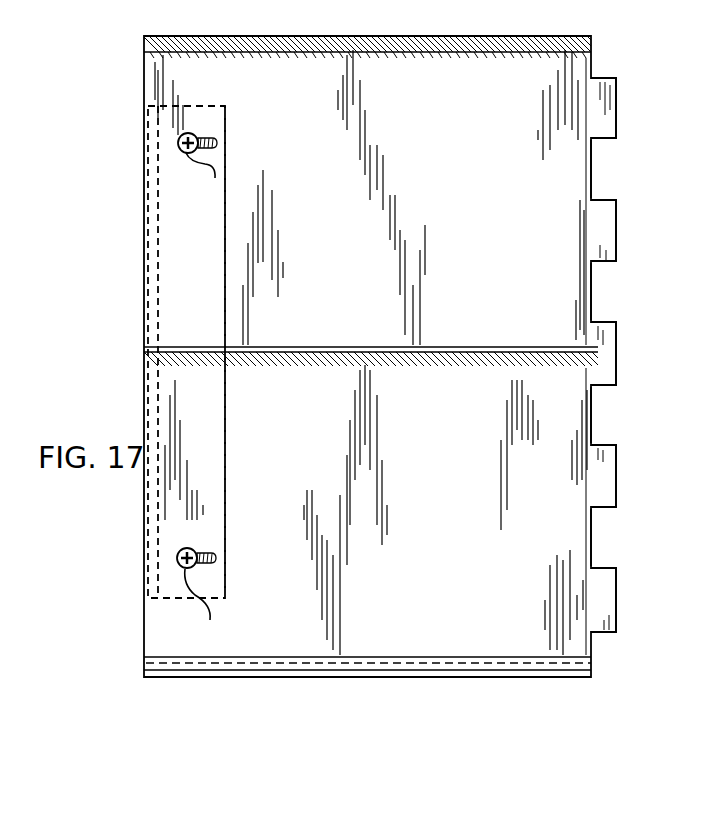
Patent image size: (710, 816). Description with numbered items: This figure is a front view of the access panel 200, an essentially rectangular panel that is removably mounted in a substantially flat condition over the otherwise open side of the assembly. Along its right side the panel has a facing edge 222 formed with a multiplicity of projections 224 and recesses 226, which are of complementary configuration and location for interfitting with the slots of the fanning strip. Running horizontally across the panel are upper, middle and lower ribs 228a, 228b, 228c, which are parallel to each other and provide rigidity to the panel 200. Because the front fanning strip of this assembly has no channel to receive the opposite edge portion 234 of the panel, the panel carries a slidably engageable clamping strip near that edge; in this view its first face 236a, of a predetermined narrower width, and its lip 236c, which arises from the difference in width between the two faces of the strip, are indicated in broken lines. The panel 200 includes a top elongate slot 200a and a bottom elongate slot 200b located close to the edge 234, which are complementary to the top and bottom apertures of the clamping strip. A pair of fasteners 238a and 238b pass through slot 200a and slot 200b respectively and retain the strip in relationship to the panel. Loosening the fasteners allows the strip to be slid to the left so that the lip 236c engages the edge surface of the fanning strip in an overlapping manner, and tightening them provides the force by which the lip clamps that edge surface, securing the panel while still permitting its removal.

The facing edge 222 is at (595, 53).
The projections 224 is at (600, 107).
The recesses 226 is at (592, 290).
The upper rib 228a is at (480, 53).
The middle rib 228b is at (438, 354).
The lower rib 228c is at (408, 670).
The access panel 200 is at (388, 228).
The top elongate slot 200a is at (217, 143).
The bottom elongate slot 200b is at (216, 558).
The opposite edge portion 234 is at (142, 143).
The first face 236a is at (213, 425).
The lip 236c is at (150, 238).
The fastener 238a is at (192, 171).
The fastener 238b is at (189, 603).